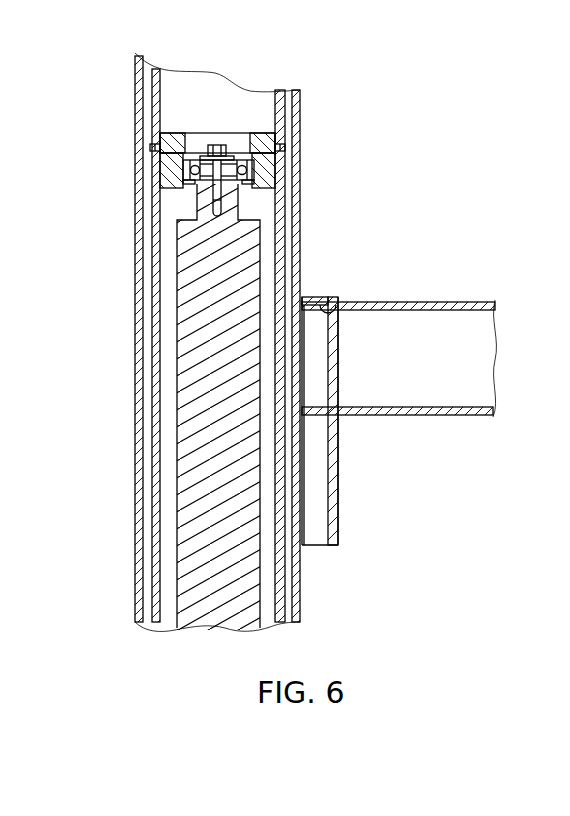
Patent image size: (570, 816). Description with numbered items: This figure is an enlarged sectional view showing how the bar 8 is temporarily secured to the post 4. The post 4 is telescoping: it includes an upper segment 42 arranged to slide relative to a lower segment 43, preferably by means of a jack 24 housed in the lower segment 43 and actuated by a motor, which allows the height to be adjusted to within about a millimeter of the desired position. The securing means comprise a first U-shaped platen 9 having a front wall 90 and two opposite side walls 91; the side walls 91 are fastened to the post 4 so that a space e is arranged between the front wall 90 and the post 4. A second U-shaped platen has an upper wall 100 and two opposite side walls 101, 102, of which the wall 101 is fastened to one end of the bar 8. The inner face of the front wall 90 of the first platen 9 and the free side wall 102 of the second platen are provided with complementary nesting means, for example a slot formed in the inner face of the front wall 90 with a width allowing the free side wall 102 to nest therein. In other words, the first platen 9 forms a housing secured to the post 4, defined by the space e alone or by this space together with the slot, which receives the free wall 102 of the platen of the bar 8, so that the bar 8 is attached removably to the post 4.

The post 4 is at (181, 343).
The lower segment 43 is at (135, 342).
The upper segment 42 is at (207, 98).
The jack 24 is at (213, 485).
The bar 8 is at (443, 302).
The first U-shaped platen 9 is at (372, 404).
The front wall 90 is at (340, 452).
The side walls 91 is at (317, 532).
The upper wall 100 is at (340, 298).
The side wall 101 is at (338, 373).
The free side wall 102 is at (305, 347).
The space e is at (318, 287).